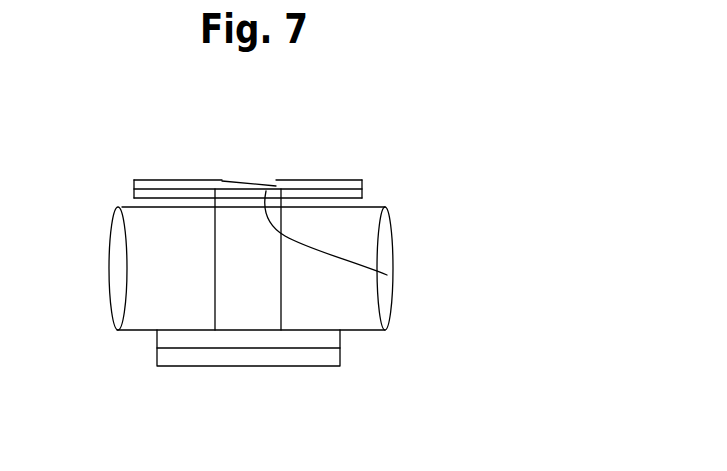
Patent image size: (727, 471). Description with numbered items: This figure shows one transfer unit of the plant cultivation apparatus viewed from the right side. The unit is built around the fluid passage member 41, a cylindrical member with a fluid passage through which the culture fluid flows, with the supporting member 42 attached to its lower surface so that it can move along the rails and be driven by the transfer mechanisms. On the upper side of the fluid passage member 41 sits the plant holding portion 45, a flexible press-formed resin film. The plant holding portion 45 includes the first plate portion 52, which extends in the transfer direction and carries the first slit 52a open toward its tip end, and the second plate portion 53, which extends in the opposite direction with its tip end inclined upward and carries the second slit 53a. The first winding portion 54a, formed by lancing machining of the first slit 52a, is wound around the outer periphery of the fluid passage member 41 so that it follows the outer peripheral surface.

The fluid passage member 41 is at (317, 307).
The supporting member 42 is at (195, 370).
The plant holding portion 45 is at (271, 134).
The first plate portion 52 is at (331, 207).
The first slit 52a is at (387, 275).
The second plate portion 53 is at (271, 134).
The second slit 53a is at (221, 181).
The first winding portion 54a is at (280, 288).